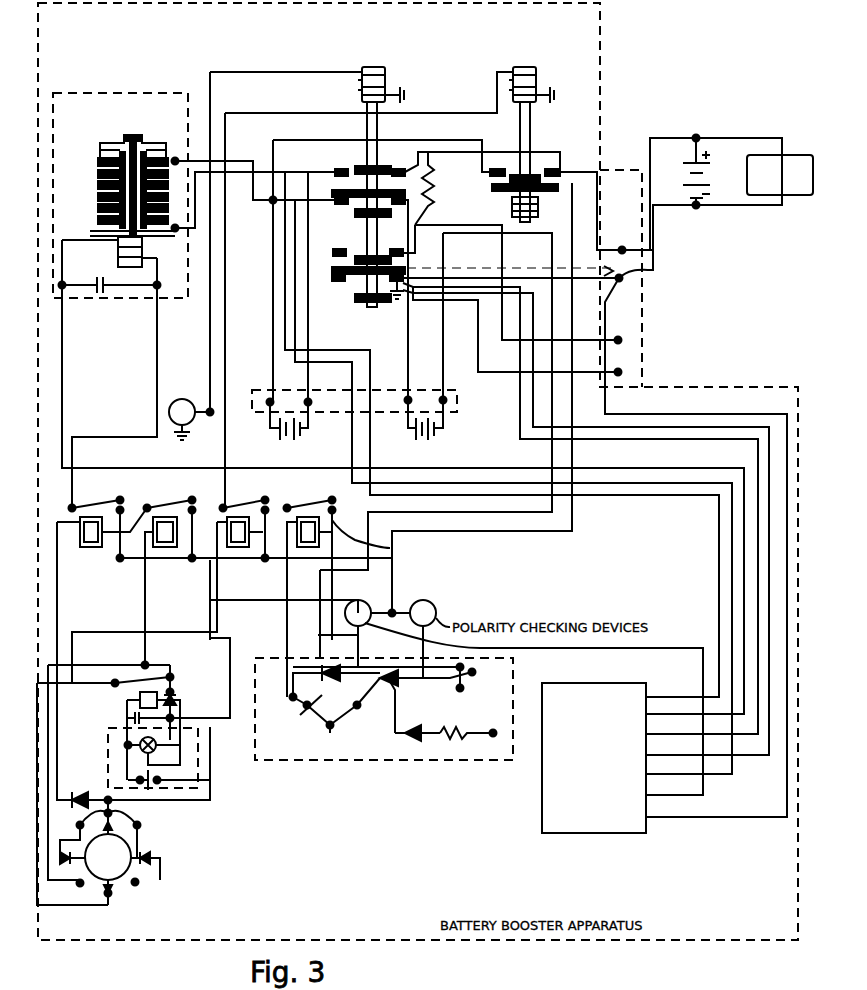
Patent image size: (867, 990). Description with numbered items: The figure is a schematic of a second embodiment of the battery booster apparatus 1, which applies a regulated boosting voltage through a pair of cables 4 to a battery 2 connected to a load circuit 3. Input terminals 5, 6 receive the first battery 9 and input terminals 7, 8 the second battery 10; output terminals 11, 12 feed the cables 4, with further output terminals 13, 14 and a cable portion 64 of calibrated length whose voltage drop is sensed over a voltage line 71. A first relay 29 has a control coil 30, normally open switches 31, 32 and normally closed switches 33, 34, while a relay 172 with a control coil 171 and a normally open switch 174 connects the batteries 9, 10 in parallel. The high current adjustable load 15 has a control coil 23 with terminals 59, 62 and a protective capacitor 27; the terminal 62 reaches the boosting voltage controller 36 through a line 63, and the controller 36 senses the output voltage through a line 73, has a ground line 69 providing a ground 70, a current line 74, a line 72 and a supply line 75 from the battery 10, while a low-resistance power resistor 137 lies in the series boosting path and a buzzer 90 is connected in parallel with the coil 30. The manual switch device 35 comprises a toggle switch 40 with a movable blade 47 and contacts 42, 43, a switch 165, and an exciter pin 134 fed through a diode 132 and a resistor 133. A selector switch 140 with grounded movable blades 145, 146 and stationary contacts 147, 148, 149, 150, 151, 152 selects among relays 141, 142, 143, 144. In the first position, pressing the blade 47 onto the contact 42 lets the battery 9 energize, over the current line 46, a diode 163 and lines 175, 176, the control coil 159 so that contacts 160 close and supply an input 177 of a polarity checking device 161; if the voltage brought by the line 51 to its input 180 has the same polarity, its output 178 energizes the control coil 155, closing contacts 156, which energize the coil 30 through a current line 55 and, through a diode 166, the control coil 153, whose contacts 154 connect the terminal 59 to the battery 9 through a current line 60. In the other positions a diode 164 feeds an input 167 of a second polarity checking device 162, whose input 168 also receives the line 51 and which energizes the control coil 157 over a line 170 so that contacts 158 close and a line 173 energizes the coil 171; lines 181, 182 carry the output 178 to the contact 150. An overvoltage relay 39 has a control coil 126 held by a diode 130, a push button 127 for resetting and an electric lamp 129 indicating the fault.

The battery booster apparatus 1 is at (393, 925).
The battery 2 is at (682, 176).
The load circuit 3 is at (796, 156).
The cables 4 is at (655, 236).
The input terminal 5 is at (443, 397).
The input terminal 6 is at (408, 397).
The input terminal 7 is at (270, 398).
The input terminal 8 is at (308, 398).
The first direct current voltage source 9 is at (452, 424).
The second voltage source 10 is at (322, 418).
The output terminal 11 is at (620, 246).
The output terminal 12 is at (640, 272).
The output terminal 13 is at (619, 336).
The output terminal 14 is at (606, 365).
The high current adjustable load 15 is at (168, 94).
The control coil 23 is at (143, 250).
The protective capacitor 27 is at (97, 278).
The first relay 29 is at (352, 60).
The control coil 30 is at (386, 84).
The normally open switch 31 is at (372, 166).
The normally open switch 32 is at (355, 256).
The normally closed switch 33 is at (360, 213).
The normally closed switch 34 is at (362, 290).
The manual switch device 35 is at (508, 664).
The boosting voltage controller 36 is at (626, 833).
The relay 39 is at (175, 678).
The single-pole double-throw toggle switch 40 is at (336, 730).
The contact 42 is at (357, 705).
The contact 43 is at (300, 720).
The current line 46 is at (445, 518).
The movable blade 47 is at (330, 728).
The line 51 is at (572, 452).
The current line 55 is at (210, 352).
The terminal 59 is at (157, 285).
The current line 60 is at (156, 357).
The terminal 62 is at (95, 231).
The line 63 is at (655, 712).
The cable portion 64 is at (490, 268).
The ground line 69 is at (655, 733).
The ground 70 is at (66, 852).
The voltage line 71 is at (700, 817).
The line 72 is at (665, 817).
The line 73 is at (694, 780).
The current line 74 is at (655, 754).
The supply line 75 is at (668, 696).
The buzzer 90 is at (172, 402).
The control coil 126 is at (130, 700).
The push button 127 is at (160, 800).
The electric lamp 129 is at (128, 745).
The diode 130 is at (185, 750).
The diode 132 is at (410, 756).
The resistor 133 is at (454, 756).
The exciter pin 134 is at (498, 756).
The low-resistance power resistor 137 is at (436, 195).
The selector switch 140 is at (150, 876).
The relay 141 is at (88, 500).
The relay 142 is at (150, 470).
The relay 143 is at (232, 502).
The relay 144 is at (316, 500).
The movable blade 145 is at (109, 852).
The movable blade 146 is at (90, 862).
The stationary contact 147 is at (112, 810).
The stationary contact 148 is at (140, 828).
The stationary contact 149 is at (160, 856).
The stationary contact 150 is at (80, 890).
The stationary contact 151 is at (112, 898).
The stationary contact 152 is at (140, 888).
The control coil 153 is at (80, 548).
The normally open contacts 154 is at (130, 490).
The control coil 155 is at (150, 548).
The normally open contacts 156 is at (205, 480).
The control coil 157 is at (220, 548).
The contacts 158 is at (270, 500).
The control coil 159 is at (290, 548).
The normally open contacts 160 is at (375, 556).
The polarity checking device 161 is at (362, 600).
The polarity checking device 162 is at (438, 610).
The diode 163 is at (460, 688).
The diode 164 is at (392, 690).
The switch 165 is at (472, 672).
The diode 166 is at (293, 697).
The input 167 is at (522, 655).
The second input 168 is at (405, 605).
The line 170 is at (80, 632).
The control coil 171 is at (540, 72).
The relay 172 is at (500, 60).
The line 173 is at (232, 276).
The normally open switch 174 is at (522, 172).
The line 175 is at (320, 625).
The line 176 is at (206, 790).
The input 177 is at (318, 635).
The output 178 is at (336, 585).
The input 180 is at (418, 600).
The line 181 is at (148, 607).
The line 182 is at (112, 665).